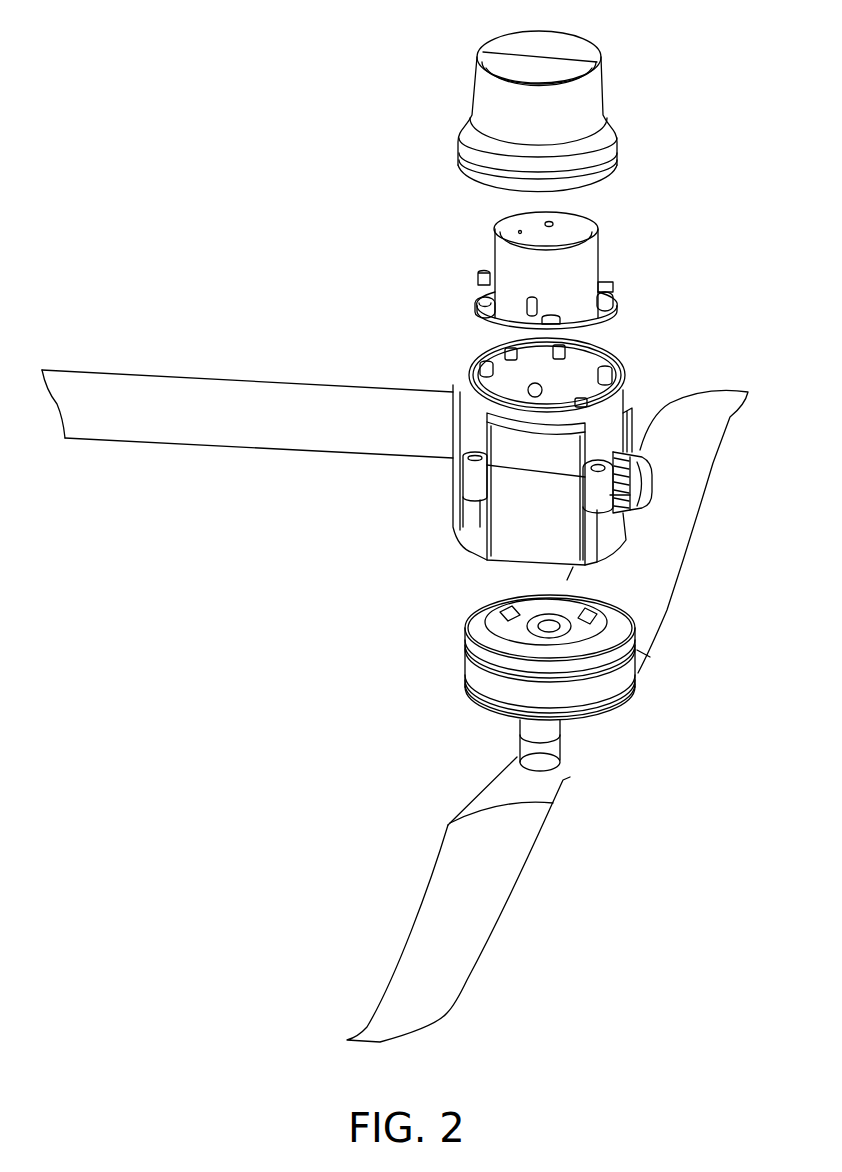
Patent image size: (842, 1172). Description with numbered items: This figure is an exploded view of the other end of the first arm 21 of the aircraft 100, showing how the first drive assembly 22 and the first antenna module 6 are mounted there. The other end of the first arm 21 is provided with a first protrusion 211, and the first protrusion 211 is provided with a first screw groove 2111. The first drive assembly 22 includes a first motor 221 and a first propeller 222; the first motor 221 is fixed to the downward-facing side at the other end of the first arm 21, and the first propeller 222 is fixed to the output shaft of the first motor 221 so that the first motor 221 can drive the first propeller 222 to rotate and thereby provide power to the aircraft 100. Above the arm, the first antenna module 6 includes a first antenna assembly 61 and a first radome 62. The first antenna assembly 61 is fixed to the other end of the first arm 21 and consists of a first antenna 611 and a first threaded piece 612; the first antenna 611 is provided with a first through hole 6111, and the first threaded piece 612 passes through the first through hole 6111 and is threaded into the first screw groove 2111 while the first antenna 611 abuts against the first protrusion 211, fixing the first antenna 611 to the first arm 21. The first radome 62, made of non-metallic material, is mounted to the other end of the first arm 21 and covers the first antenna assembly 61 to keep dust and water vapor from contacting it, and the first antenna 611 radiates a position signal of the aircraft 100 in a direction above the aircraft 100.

The aircraft 100 is at (250, 132).
The first antenna module 6 is at (367, 190).
The first radome 62 is at (497, 110).
The first antenna assembly 61 is at (407, 212).
The first antenna 611 is at (508, 255).
The first threaded piece 612 is at (482, 273).
The first through hole 6111 is at (480, 299).
The first arm 21 is at (210, 412).
The first protrusion 211 is at (466, 368).
The first screw groove 2111 is at (486, 360).
The first drive assembly 22 is at (327, 625).
The first motor 221 is at (500, 645).
The first propeller 222 is at (487, 845).